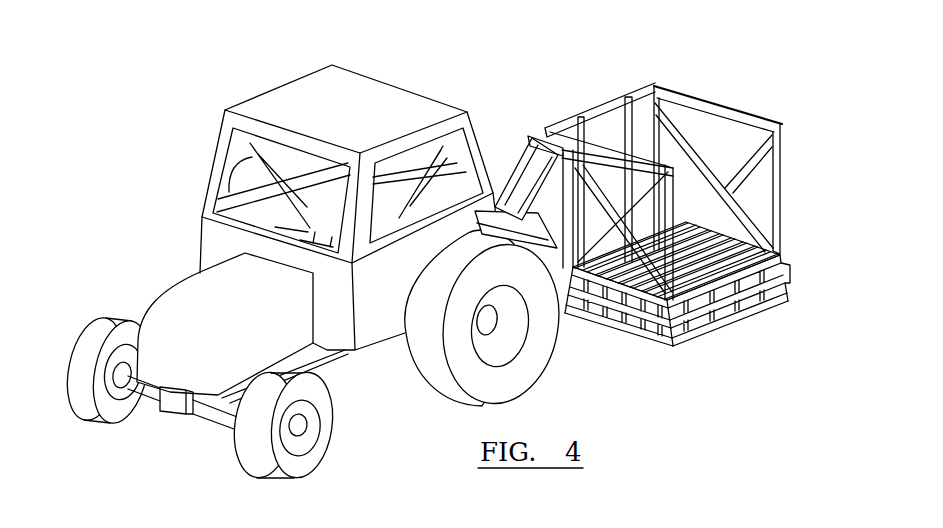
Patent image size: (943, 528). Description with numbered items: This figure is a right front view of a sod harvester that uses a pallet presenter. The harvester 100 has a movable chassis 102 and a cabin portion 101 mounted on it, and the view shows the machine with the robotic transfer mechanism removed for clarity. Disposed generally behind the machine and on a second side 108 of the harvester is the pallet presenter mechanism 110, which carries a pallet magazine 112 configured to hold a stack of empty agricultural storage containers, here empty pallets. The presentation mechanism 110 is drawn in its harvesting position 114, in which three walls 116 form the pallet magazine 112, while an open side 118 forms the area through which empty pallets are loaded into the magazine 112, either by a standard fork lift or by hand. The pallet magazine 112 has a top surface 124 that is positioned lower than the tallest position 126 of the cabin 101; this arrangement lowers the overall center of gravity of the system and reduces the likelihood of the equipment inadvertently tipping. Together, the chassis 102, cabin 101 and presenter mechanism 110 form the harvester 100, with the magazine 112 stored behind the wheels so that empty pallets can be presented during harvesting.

The harvester 100 is at (315, 260).
The cabin portion 101 is at (357, 82).
The movable chassis 102 is at (176, 302).
The second side 108 is at (373, 337).
The pallet presenter mechanism 110 is at (692, 180).
The pallet magazine 112 is at (781, 224).
The harvesting position 114 is at (672, 357).
The walls 116 is at (673, 96).
The open side 118 is at (764, 198).
The top surface 124 is at (602, 102).
The tallest position 126 is at (293, 92).